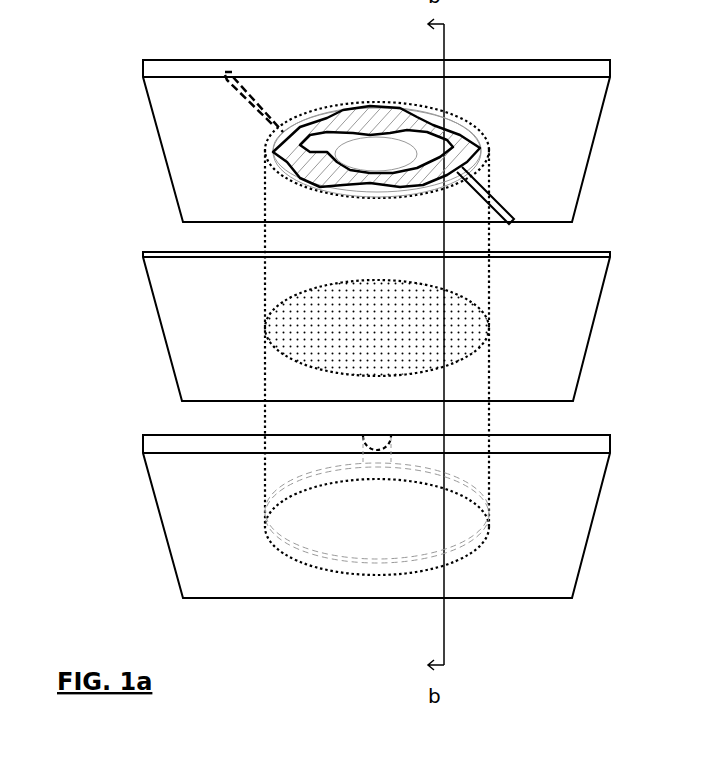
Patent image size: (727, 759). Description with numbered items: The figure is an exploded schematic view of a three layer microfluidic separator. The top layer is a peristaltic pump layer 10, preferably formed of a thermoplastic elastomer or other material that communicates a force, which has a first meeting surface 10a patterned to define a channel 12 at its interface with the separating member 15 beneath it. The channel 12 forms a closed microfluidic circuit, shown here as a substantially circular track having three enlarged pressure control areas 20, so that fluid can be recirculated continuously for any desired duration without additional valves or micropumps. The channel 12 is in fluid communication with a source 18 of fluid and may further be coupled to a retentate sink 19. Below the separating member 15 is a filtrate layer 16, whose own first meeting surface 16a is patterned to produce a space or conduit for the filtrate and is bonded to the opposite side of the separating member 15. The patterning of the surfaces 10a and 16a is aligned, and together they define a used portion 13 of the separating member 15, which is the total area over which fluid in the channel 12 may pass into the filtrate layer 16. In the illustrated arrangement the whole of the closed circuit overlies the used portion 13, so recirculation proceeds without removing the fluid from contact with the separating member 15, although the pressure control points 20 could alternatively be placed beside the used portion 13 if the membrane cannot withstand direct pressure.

The peristaltic pump layer 10 is at (376, 141).
The first meeting surface 10a is at (198, 112).
The channel 12 is at (335, 124).
The used portion 13 is at (377, 328).
The separating member 15 is at (376, 326).
The filtrate layer 16 is at (376, 516).
The first meeting surface 16a is at (195, 435).
The source 18 is at (503, 203).
The retentate sink 19 is at (232, 100).
The pressure control points 20 is at (314, 170).